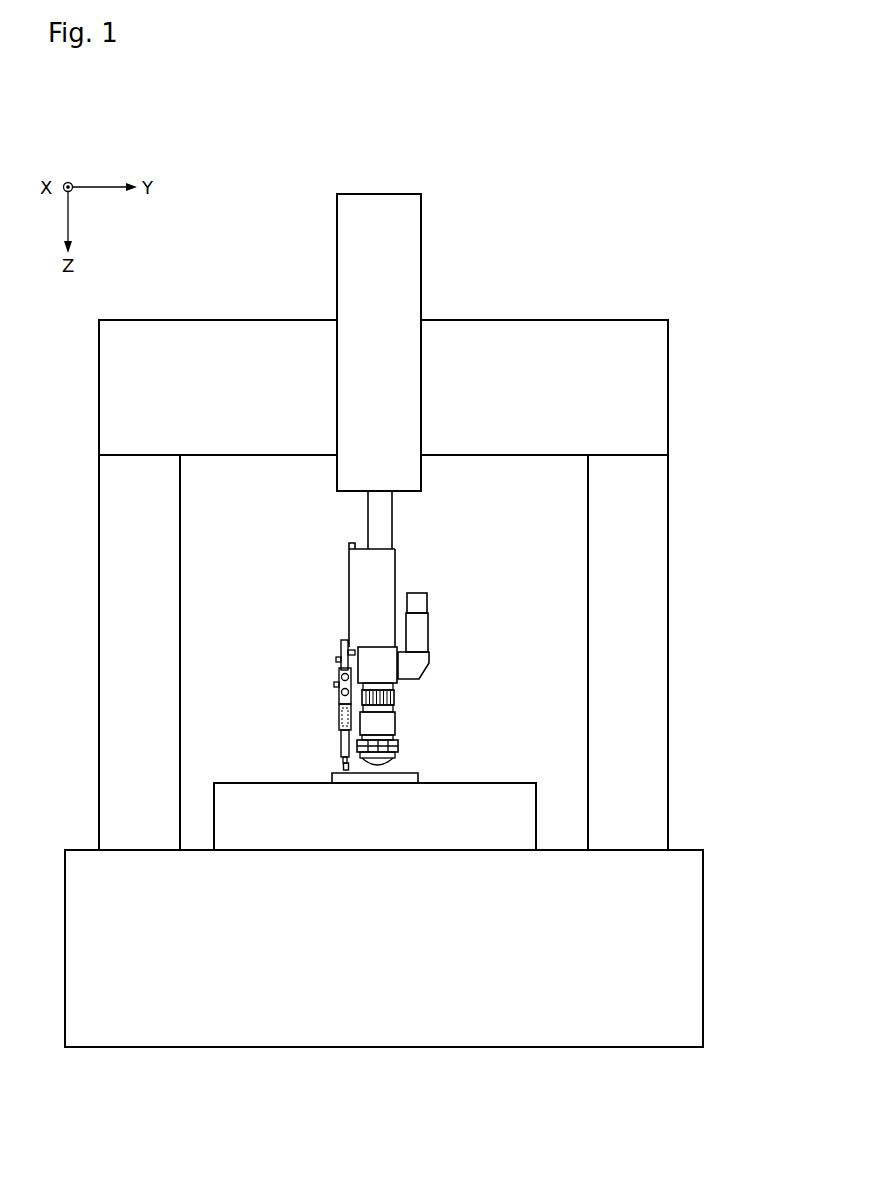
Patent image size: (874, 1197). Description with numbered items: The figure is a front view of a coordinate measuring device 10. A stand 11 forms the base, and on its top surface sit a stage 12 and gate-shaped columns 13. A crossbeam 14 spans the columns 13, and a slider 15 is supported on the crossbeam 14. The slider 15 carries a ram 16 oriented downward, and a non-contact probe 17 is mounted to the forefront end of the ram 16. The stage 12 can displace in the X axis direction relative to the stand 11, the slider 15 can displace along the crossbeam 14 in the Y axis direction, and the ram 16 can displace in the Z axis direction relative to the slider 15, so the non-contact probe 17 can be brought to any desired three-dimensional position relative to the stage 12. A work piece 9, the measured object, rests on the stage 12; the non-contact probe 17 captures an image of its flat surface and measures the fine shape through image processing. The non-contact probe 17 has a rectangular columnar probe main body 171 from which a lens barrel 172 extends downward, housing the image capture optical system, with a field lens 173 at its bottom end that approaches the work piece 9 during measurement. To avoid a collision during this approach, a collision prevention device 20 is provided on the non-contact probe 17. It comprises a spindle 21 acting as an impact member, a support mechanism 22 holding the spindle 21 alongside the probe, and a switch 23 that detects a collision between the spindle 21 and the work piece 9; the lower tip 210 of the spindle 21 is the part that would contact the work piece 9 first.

The coordinate measuring device 10 is at (616, 252).
The stand 11 is at (693, 935).
The stage 12 is at (513, 813).
The gate-shaped columns 13 is at (668, 510).
The crossbeam 14 is at (668, 358).
The slider 15 is at (418, 222).
The ram 16 is at (383, 522).
The non-contact probe 17 is at (458, 619).
The probe main body 171 is at (383, 565).
The lens barrel 172 is at (397, 698).
The field lens 173 is at (398, 757).
The collision prevention device 20 is at (296, 631).
The spindle 21 is at (342, 744).
The support mechanism 22 is at (338, 682).
The switch 23 is at (337, 720).
The probe tip 210 is at (343, 760).
The work piece 9 is at (422, 778).